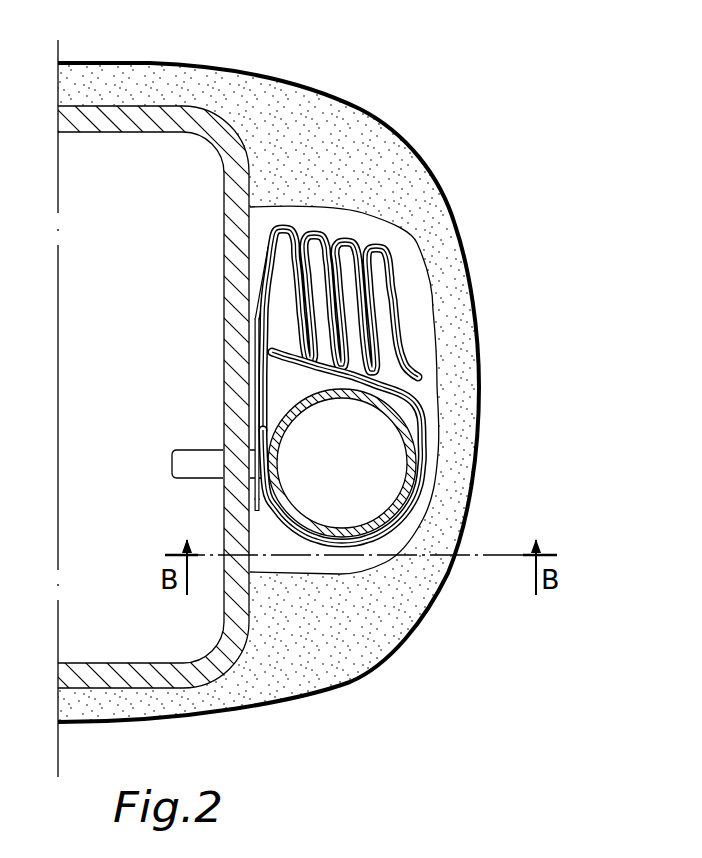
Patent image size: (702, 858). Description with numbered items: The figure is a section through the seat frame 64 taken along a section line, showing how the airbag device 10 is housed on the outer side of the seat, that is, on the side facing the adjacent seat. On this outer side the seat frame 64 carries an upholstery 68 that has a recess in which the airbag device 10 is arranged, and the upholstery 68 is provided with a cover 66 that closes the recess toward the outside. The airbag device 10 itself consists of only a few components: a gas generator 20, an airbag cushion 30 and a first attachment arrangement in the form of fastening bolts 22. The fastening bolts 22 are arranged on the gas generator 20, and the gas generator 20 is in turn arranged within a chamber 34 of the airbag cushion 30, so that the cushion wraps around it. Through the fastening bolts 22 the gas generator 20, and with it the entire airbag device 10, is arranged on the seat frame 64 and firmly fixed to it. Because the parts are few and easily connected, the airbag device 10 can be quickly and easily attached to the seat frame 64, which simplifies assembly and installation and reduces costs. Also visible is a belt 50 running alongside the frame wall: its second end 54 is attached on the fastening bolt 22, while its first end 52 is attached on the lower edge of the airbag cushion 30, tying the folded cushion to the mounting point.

The airbag device 10 is at (306, 361).
The gas generator 20 is at (357, 474).
The fastening bolts 22 is at (185, 462).
The airbag cushion 30 is at (395, 298).
The chamber 34 is at (400, 406).
The belt 50 is at (215, 385).
The first end 52 is at (270, 248).
The second end 54 is at (255, 498).
The seat frame 64 is at (222, 199).
The cover 66 is at (274, 68).
The upholstery 68 is at (355, 140).